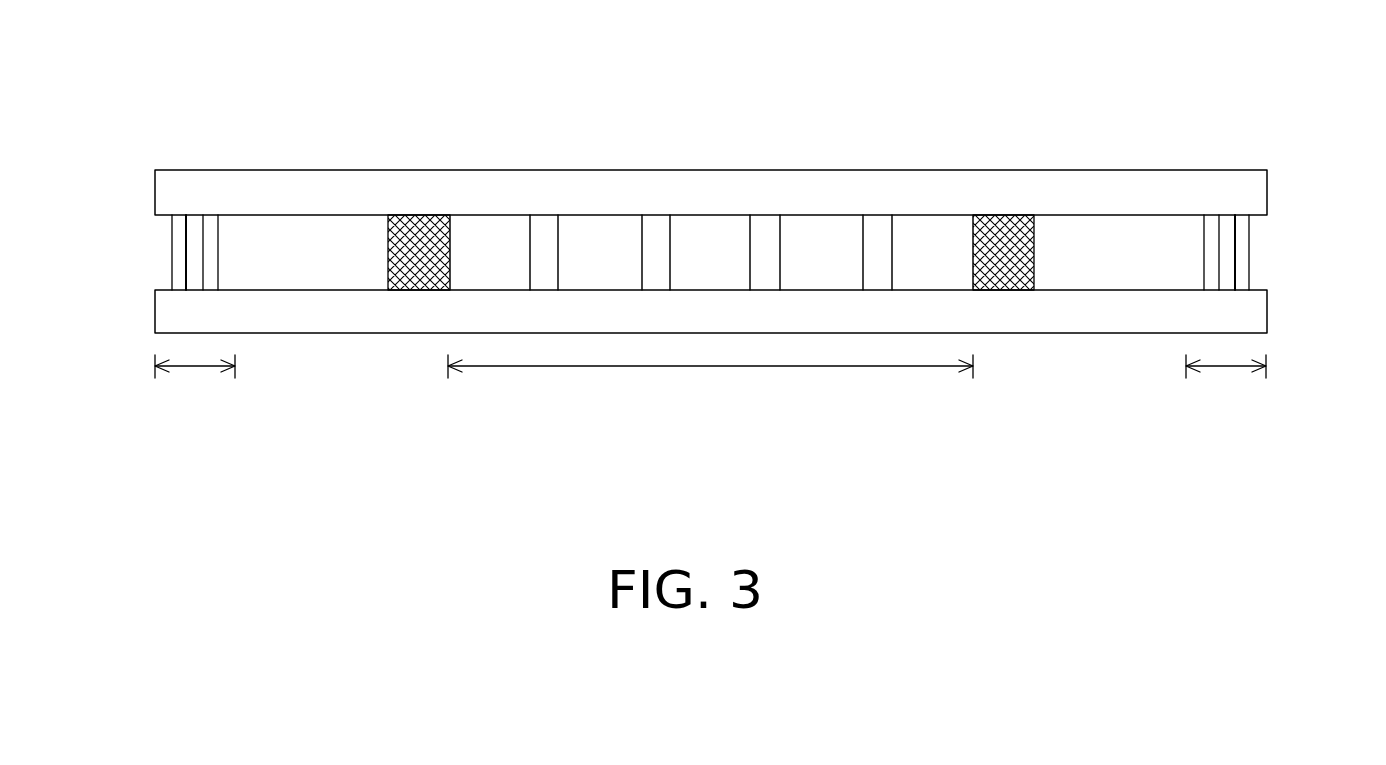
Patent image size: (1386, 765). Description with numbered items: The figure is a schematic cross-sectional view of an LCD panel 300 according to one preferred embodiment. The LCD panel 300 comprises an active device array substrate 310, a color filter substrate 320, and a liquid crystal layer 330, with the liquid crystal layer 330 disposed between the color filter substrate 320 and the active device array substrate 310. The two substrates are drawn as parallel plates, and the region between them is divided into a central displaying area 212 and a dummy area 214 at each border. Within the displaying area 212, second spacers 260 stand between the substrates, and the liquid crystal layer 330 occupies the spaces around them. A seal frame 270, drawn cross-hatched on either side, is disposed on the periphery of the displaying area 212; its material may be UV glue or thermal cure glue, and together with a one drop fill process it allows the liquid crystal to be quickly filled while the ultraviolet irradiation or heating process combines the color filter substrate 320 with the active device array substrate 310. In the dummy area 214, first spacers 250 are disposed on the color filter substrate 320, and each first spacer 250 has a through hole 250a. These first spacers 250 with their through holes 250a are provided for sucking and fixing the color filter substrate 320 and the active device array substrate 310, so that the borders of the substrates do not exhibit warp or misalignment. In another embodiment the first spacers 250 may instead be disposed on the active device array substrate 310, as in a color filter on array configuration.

The LCD panel 300 is at (1351, 429).
The active device array substrate 310 is at (1246, 313).
The color filter substrate 320 is at (1252, 196).
The liquid crystal layer 330 is at (605, 238).
The first spacer 250 is at (158, 248).
The through hole 250a is at (200, 257).
The seal frame 270 is at (423, 243).
The second spacer 260 is at (656, 273).
The displaying area 212 is at (704, 368).
The dummy area 214 is at (193, 370).